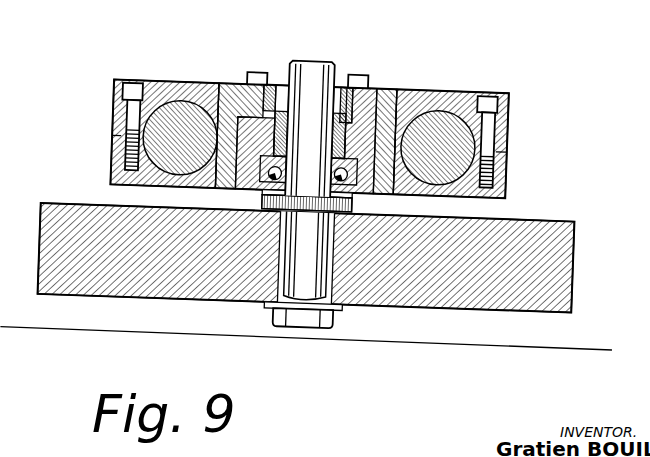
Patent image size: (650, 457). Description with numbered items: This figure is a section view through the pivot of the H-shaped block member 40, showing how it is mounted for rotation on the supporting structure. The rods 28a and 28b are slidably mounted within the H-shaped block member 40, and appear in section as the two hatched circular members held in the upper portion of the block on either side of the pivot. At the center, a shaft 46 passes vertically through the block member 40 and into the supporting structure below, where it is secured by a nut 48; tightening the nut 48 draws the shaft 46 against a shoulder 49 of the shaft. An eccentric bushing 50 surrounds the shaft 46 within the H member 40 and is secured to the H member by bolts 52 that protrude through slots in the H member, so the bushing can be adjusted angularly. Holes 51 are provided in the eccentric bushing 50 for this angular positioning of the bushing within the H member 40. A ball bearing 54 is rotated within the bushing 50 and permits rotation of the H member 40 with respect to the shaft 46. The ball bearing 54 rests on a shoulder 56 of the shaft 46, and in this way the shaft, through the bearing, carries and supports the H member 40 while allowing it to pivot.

The rod 28a is at (177, 121).
The rod 28b is at (420, 119).
The H-shaped block member 40 is at (446, 92).
The shaft 46 is at (310, 61).
The nut 48 is at (341, 321).
The shoulder 49 is at (297, 207).
The eccentric bushing 50 is at (362, 183).
The holes 51 is at (276, 85).
The bolts 52 is at (248, 72).
The ball bearing 54 is at (262, 181).
The shoulder 56 is at (331, 212).